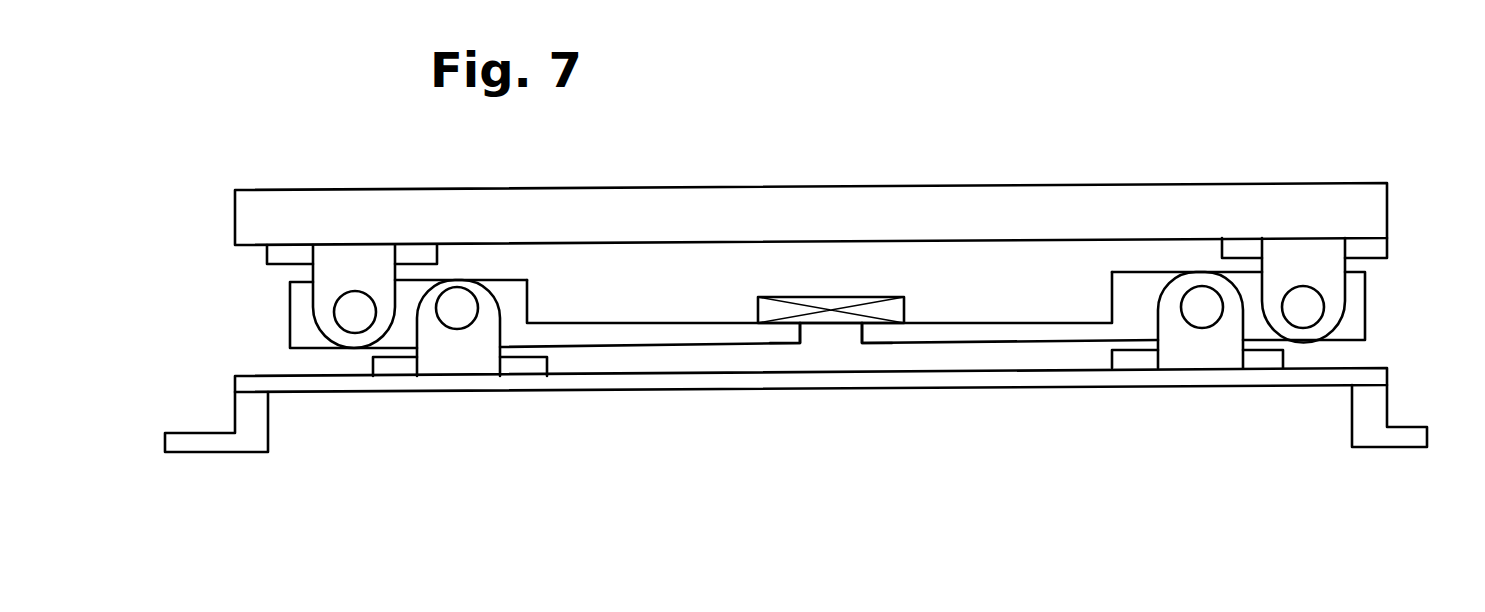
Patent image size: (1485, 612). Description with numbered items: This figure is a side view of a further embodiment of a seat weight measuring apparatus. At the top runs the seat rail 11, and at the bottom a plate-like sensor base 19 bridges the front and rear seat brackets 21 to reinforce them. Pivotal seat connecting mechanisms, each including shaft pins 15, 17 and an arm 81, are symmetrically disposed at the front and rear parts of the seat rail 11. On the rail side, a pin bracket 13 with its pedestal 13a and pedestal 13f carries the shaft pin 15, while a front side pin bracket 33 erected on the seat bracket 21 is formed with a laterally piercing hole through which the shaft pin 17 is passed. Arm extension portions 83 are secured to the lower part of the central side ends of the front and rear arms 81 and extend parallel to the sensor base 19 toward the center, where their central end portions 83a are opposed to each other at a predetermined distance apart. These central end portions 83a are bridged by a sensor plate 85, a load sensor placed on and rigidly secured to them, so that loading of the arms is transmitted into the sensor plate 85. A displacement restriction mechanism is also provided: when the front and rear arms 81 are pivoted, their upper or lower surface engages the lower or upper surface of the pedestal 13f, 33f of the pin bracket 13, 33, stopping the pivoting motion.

The seat rail 11 is at (828, 210).
The pin bracket 13 is at (327, 295).
The pedestal 13a is at (1363, 250).
The pedestal 13f is at (287, 253).
The shaft pin 15 is at (352, 327).
The shaft pin 17 is at (460, 307).
The sensor base 19 is at (660, 385).
The seat bracket 21 is at (240, 415).
The front side pin bracket 33 is at (467, 347).
The pedestal 33f is at (528, 367).
The arm 81 is at (400, 333).
The arm extension portion 83 is at (588, 337).
The central end portion 83a is at (777, 337).
The sensor plate 85 is at (767, 312).